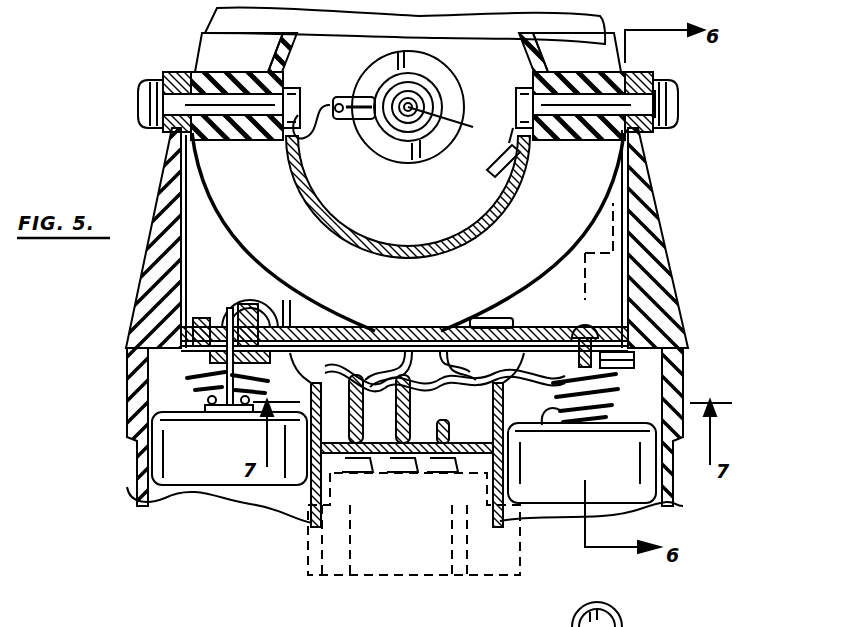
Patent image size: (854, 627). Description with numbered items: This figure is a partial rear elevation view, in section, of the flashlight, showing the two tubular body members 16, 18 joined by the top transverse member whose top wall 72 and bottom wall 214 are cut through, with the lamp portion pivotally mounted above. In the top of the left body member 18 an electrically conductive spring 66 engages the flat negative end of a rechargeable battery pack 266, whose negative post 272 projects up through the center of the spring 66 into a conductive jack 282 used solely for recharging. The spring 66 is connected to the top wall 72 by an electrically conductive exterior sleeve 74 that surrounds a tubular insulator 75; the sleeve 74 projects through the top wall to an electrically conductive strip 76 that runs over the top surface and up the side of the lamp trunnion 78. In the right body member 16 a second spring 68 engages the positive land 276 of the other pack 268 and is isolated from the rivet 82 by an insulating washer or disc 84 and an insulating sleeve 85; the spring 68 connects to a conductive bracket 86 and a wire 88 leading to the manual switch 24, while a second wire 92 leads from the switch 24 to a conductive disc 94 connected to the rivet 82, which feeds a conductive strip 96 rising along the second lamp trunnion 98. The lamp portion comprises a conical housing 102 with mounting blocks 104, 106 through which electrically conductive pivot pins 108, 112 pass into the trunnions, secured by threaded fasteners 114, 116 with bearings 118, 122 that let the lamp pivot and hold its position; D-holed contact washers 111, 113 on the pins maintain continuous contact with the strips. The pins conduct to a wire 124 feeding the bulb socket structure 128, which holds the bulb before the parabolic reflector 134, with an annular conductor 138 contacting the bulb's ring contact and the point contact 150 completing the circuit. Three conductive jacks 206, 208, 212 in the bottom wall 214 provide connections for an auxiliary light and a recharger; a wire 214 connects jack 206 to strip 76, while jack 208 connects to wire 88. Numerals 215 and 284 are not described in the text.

The body member 16 is at (668, 497).
The body member 18 is at (137, 483).
The manual switch 24 is at (430, 324).
The electrically conductive spring 66 is at (187, 376).
The electrically conductive spring 68 is at (551, 420).
The transverse member top wall 72 is at (322, 346).
The exterior sleeve 74 is at (185, 299).
The tubular insulator 75 is at (217, 318).
The electrically conductive strip 76 is at (190, 216).
The lamp trunnion 78 is at (157, 204).
The rivet 82 is at (596, 325).
The insulating washer or disc 84 is at (664, 353).
The insulating sleeve 85 is at (676, 370).
The electrically conductive bracket 86 is at (632, 343).
The wire 88 is at (540, 422).
The second wire 92 is at (449, 328).
The electrically conductive disc 94 is at (517, 337).
The electrically conductive strip 96 is at (620, 190).
The second lamp trunnion 98 is at (655, 243).
The conical housing 102 is at (200, 36).
The mounting block 104 is at (562, 138).
The mounting block 106 is at (237, 128).
The pivot pin 108 is at (648, 146).
The contact washer 111 is at (625, 63).
The pivot pin 112 is at (173, 131).
The contact washer 113 is at (190, 70).
The threaded fastener 114 is at (672, 103).
The threaded fastener 116 is at (137, 98).
The bearing 118 is at (680, 130).
The bearing 122 is at (163, 77).
The wire 124 is at (322, 140).
The bulb socket structure 128 is at (466, 93).
The parabolic reflector 134 is at (408, 207).
The annular conductor 138 is at (396, 150).
The point contact 150 is at (470, 130).
The electrically conductive jack 206 is at (300, 483).
The electrically conductive jack 208 is at (480, 502).
The electrically conductive jack 212 is at (404, 455).
The bottom wall 214 is at (343, 500).
The contact leg 215 is at (328, 343).
The rechargeable battery pack 266 is at (190, 478).
The rechargeable battery pack 268 is at (664, 486).
The negative post 272 is at (205, 395).
The positive land 276 is at (598, 420).
The conductive jack 282 is at (256, 255).
The plate layer 284 is at (312, 236).